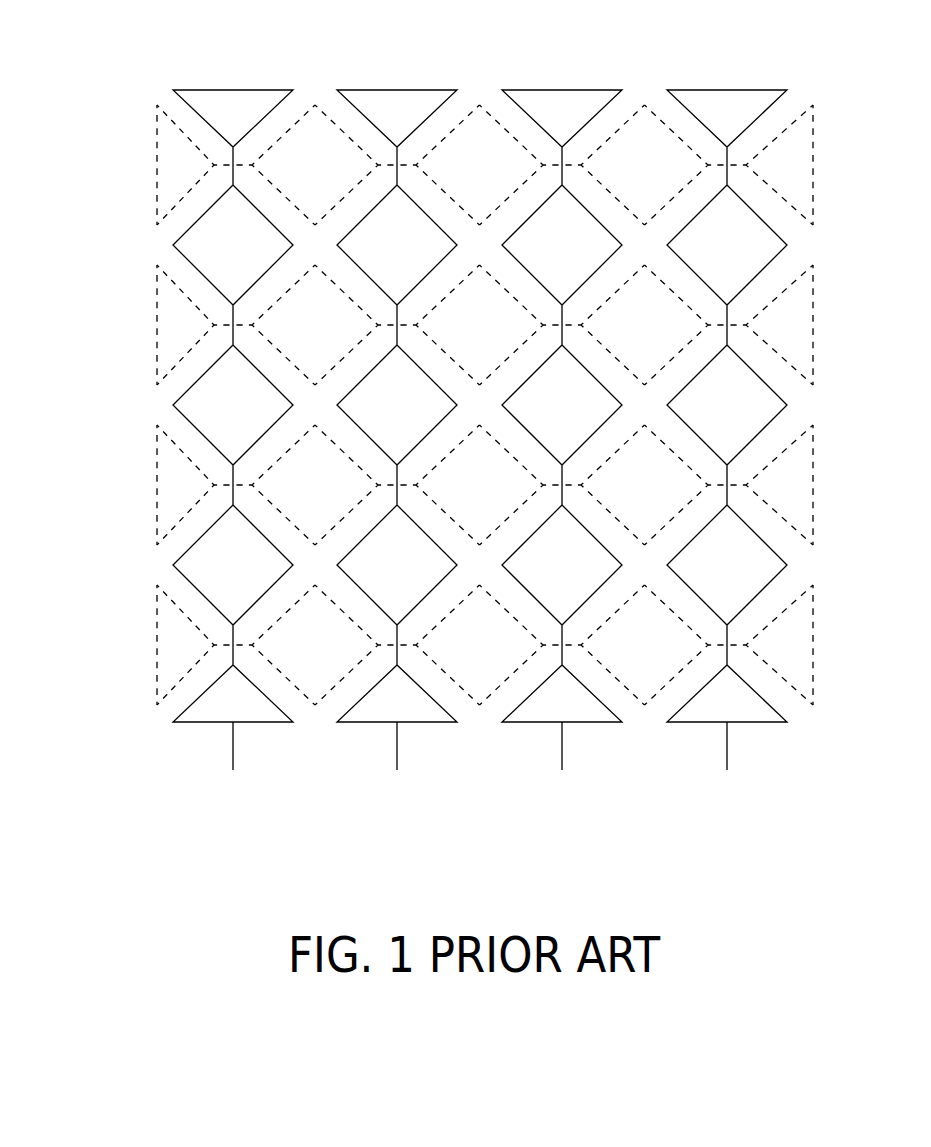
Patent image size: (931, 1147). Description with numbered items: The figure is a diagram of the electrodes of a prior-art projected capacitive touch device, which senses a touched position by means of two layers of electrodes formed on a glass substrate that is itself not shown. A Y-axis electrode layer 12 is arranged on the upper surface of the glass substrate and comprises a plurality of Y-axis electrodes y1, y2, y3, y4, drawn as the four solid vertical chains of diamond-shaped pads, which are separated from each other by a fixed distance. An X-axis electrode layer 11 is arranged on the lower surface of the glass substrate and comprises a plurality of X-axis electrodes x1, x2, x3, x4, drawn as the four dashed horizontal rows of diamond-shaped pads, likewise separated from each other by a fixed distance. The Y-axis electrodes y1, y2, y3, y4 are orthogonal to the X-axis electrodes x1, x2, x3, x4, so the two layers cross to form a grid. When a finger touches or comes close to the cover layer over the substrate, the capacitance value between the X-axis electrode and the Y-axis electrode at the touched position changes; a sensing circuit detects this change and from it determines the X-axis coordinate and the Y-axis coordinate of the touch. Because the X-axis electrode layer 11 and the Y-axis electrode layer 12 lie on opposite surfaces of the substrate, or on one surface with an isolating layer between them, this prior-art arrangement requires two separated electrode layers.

The X-axis electrode layer 11 is at (430, 352).
The Y-axis electrode layer 12 is at (457, 452).
The X-axis electrode x1 is at (157, 165).
The X-axis electrode x2 is at (157, 325).
The X-axis electrode x3 is at (157, 485).
The X-axis electrode x4 is at (157, 645).
The Y-axis electrode y1 is at (233, 447).
The Y-axis electrode y2 is at (397, 447).
The Y-axis electrode y3 is at (562, 447).
The Y-axis electrode y4 is at (727, 447).